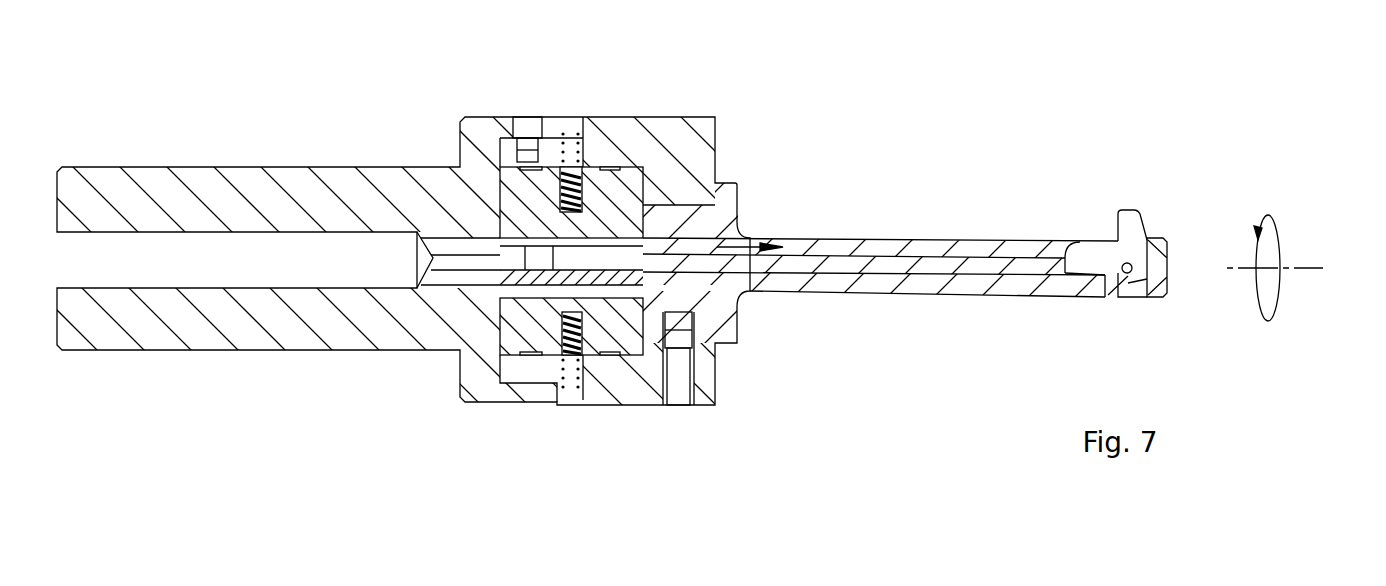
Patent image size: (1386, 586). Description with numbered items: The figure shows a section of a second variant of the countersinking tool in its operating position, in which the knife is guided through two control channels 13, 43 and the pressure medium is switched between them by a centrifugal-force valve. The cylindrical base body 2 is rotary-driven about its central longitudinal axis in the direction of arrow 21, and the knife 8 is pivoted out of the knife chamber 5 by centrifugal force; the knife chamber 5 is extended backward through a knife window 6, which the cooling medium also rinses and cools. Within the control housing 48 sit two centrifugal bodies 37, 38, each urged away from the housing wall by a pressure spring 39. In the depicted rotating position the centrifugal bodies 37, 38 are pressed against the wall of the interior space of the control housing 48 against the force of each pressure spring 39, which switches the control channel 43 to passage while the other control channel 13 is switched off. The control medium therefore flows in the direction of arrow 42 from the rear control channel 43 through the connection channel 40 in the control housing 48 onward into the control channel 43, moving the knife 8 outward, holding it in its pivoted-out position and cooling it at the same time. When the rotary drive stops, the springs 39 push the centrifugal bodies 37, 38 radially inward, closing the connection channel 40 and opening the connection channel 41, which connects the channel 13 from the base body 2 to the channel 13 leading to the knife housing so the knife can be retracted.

The base body 2 is at (310, 200).
The knife chamber 5 is at (1080, 253).
The knife window 6 is at (1137, 287).
The knife 8 is at (1150, 203).
The control channel 13 is at (450, 277).
The arrow 21 is at (1280, 245).
The centrifugal body 37 is at (620, 243).
The centrifugal body 38 is at (647, 370).
The pressure spring 39 is at (571, 140).
The connection channel 40 is at (645, 190).
The connection channel 41 is at (550, 293).
The arrow 42 is at (747, 232).
The control channel 43 is at (467, 247).
The control housing 48 is at (718, 150).